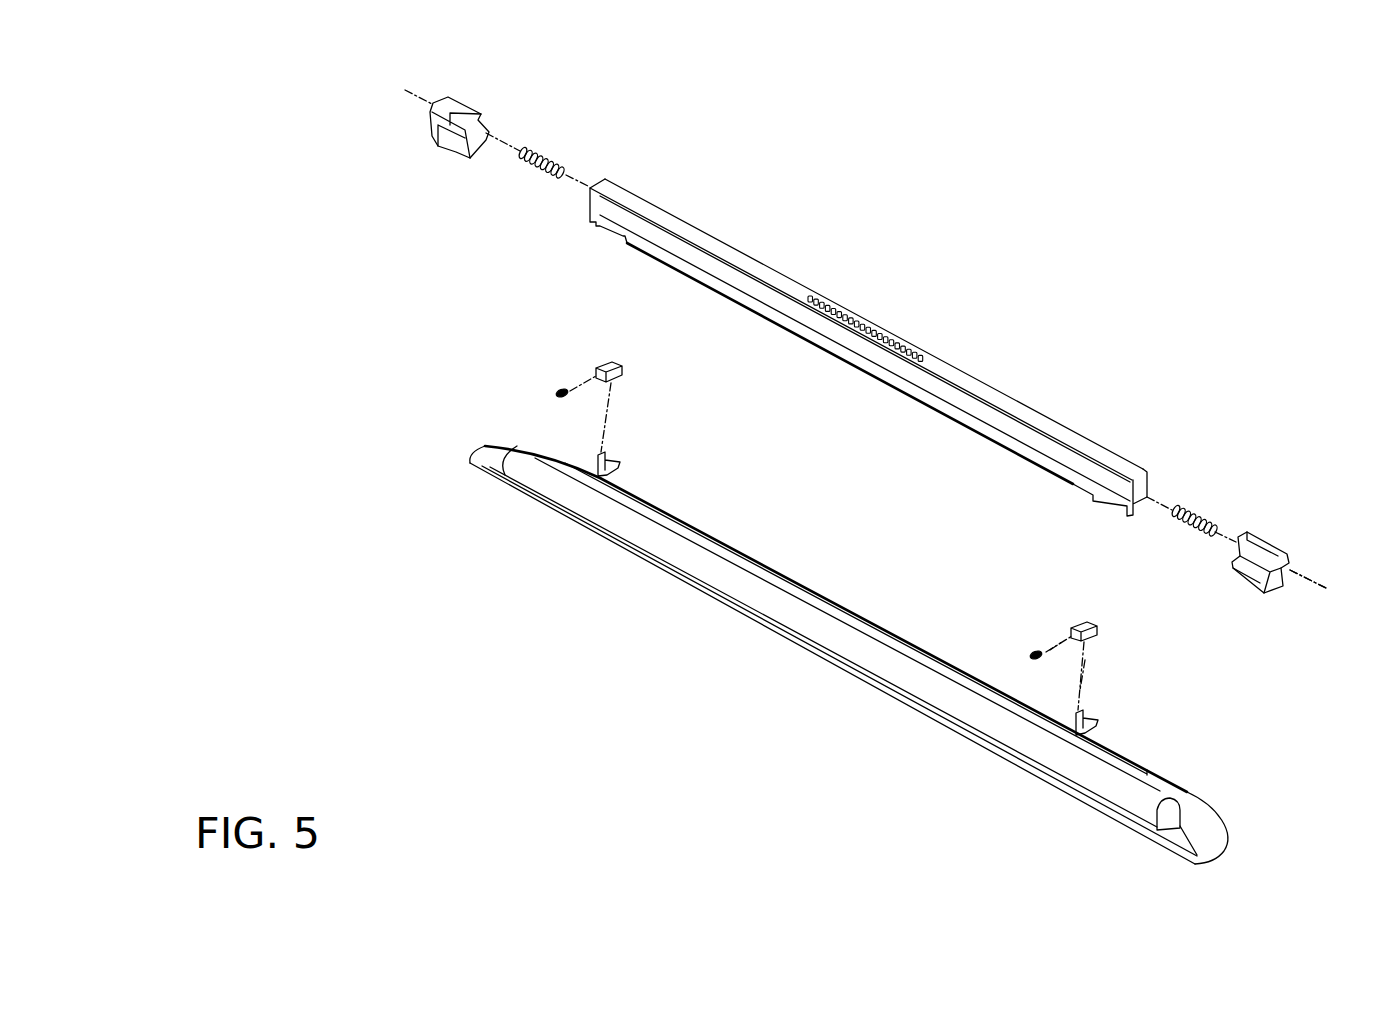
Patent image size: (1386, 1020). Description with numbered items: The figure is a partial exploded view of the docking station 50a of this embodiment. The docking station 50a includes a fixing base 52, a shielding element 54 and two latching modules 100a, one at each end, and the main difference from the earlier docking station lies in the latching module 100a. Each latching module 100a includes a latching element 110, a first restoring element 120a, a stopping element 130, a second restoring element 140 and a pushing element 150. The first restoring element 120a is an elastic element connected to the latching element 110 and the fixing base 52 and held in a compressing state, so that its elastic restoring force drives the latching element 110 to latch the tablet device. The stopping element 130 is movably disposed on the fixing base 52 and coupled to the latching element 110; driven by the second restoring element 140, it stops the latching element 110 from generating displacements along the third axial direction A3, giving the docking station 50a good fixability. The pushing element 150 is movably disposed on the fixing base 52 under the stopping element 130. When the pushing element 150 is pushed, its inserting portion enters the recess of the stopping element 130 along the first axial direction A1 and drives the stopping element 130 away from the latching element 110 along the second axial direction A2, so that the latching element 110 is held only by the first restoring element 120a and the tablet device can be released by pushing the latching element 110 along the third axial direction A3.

The docking station 50a is at (512, 533).
The fixing base 52 is at (1040, 748).
The shielding element 54 is at (1055, 432).
The latching module 100a is at (567, 139).
The latching element 110 is at (450, 122).
The first restoring element 120a is at (540, 177).
The stopping element 130 is at (610, 366).
The second restoring element 140 is at (556, 393).
The pushing element 150 is at (614, 460).
The first axial direction A1 is at (1088, 676).
The second axial direction A2 is at (1050, 650).
The third axial direction A3 is at (1325, 589).